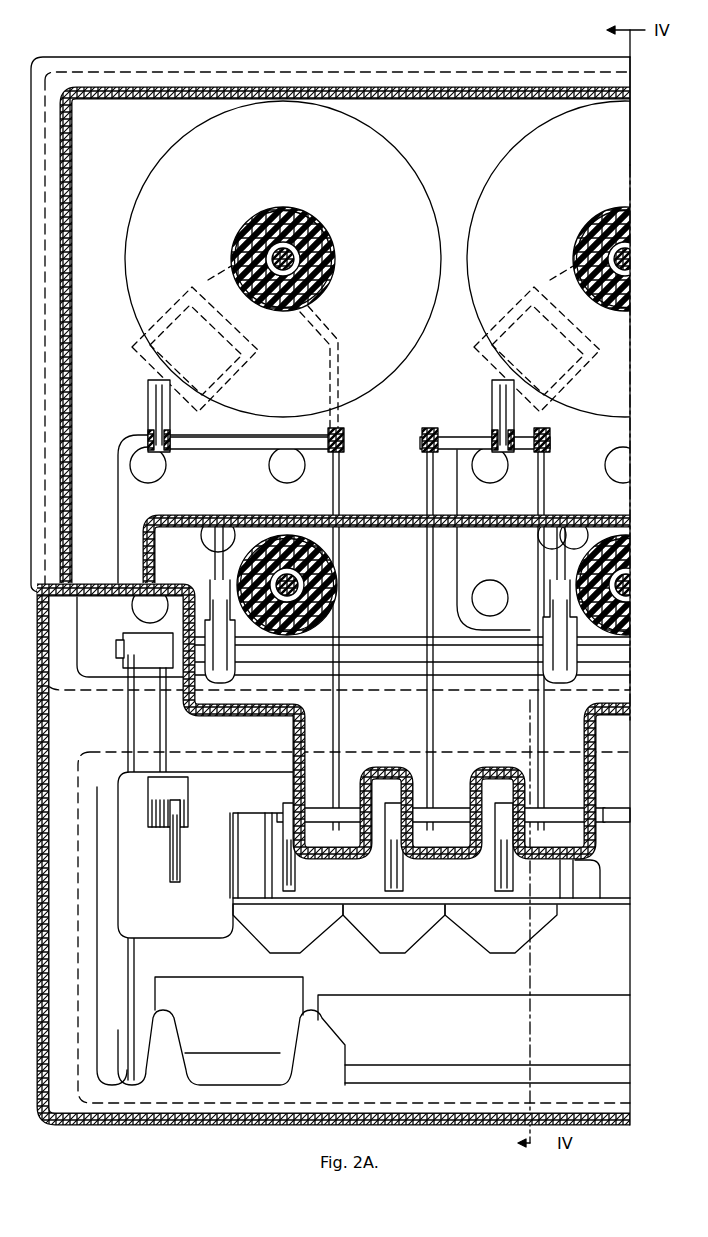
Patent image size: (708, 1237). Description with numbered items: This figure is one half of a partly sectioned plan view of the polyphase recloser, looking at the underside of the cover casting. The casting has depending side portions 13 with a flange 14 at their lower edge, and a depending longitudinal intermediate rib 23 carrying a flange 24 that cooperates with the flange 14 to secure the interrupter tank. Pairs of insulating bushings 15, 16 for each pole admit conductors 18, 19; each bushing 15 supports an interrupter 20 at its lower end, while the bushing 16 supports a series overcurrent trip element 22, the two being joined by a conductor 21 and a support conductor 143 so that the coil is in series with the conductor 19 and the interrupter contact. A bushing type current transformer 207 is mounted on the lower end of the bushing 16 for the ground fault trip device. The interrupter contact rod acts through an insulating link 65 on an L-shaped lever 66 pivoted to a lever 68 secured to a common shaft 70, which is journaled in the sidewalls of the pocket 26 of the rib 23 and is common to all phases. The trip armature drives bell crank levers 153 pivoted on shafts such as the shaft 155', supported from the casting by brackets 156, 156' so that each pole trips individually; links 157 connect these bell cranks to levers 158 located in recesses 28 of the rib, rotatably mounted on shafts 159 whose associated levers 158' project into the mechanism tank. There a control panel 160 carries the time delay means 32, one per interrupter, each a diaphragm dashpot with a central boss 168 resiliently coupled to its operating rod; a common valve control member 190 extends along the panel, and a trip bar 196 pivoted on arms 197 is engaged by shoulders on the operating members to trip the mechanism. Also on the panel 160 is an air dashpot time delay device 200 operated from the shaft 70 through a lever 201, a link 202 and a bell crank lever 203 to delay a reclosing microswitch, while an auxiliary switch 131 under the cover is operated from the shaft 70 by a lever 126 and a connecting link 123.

The depending side portions 13 is at (150, 87).
The flange 14 is at (233, 57).
The bushing type current transformer 207 is at (436, 186).
The insulating bushing 16 is at (334, 235).
The conductor 19 is at (300, 260).
The support conductor 143 is at (220, 288).
The overcurrent trip element 22 is at (108, 337).
The conductor 21 is at (340, 374).
The bell crank lever 153 is at (148, 416).
The shaft 155' is at (485, 431).
The bracket 156' is at (433, 615).
The bracket 156 is at (562, 629).
The interrupter 20 is at (86, 513).
The insulating link 65 is at (201, 539).
The L-shaped lever 66 is at (214, 565).
The insulating bushing 15 is at (332, 577).
The conductor 18 is at (302, 592).
The shaft 70 is at (361, 637).
The flange 24 is at (398, 673).
The lever 68 is at (234, 654).
The central boss 168 is at (561, 687).
The pocket 26 is at (108, 597).
The lever 126 is at (116, 652).
The lever 201 is at (128, 704).
The connecting link 123 is at (128, 739).
The link 202 is at (166, 739).
The intermediate rib 23 is at (262, 718).
The link 157 is at (345, 718).
The lever 158 is at (440, 784).
The shaft 159 is at (322, 823).
The valve control member 190 is at (612, 808).
The control panel 160 is at (220, 815).
The bell crank lever 203 is at (180, 861).
The arm 197 is at (265, 845).
The recess 28 is at (362, 856).
The lever 158' is at (398, 847).
The trip bar 196 is at (580, 904).
The air dashpot time delay device 200 is at (185, 938).
The auxiliary switch 131 is at (260, 977).
The time delay means 32 is at (316, 933).